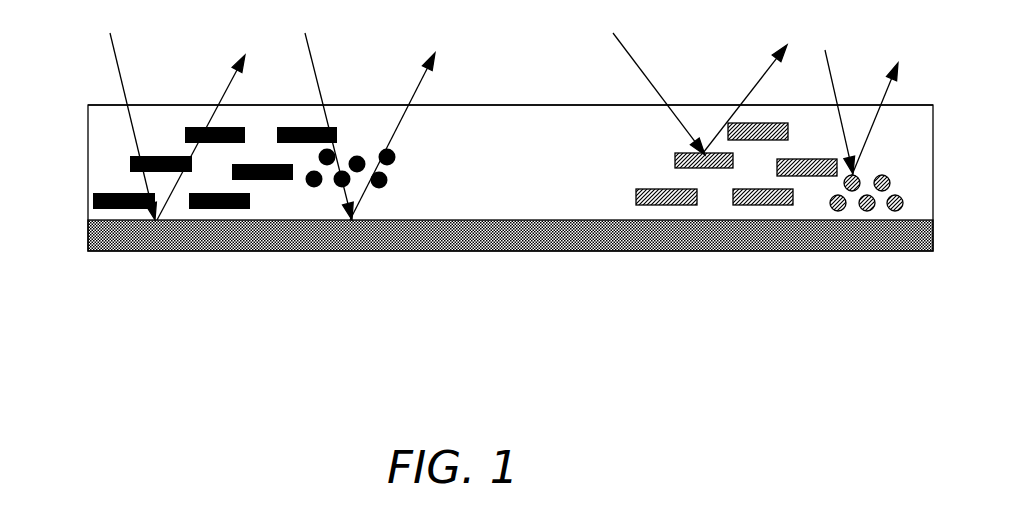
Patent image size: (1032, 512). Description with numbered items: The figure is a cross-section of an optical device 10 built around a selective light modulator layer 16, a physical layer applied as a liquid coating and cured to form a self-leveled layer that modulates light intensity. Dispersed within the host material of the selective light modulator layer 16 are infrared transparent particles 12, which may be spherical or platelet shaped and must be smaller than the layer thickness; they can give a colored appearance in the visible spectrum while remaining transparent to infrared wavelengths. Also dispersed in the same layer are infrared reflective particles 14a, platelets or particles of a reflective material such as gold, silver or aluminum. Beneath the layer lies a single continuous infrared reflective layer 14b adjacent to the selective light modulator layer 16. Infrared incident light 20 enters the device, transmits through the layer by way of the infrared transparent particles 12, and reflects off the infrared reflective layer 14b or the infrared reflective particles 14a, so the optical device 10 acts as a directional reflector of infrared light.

The optical device 10 is at (45, 190).
The infrared transparent particles 12 is at (312, 189).
The infrared reflective particles 14a is at (866, 212).
The infrared reflective layer 14b is at (612, 252).
The selective light modulator layer 16 is at (600, 105).
The infrared incident light 20 is at (497, 110).